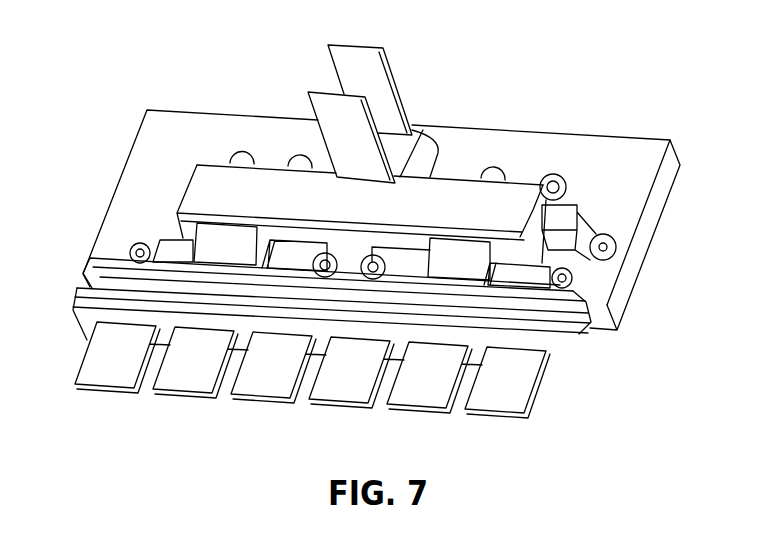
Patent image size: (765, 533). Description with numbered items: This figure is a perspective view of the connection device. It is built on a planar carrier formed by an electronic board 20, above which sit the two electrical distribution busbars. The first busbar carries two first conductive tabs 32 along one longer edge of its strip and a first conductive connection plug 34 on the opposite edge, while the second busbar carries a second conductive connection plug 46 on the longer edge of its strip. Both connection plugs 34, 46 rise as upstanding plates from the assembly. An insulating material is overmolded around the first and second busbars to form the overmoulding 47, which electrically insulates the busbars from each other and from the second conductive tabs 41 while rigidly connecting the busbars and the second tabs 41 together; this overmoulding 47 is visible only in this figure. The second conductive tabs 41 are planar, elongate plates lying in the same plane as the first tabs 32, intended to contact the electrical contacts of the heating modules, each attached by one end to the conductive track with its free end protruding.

The electronic board 20 is at (607, 163).
The first conductive tabs 32 is at (173, 377).
The first conductive connection plug 34 is at (333, 135).
The second conductive tabs 41 is at (95, 372).
The second conductive connection plug 46 is at (378, 82).
The overmoulding 47 is at (542, 192).